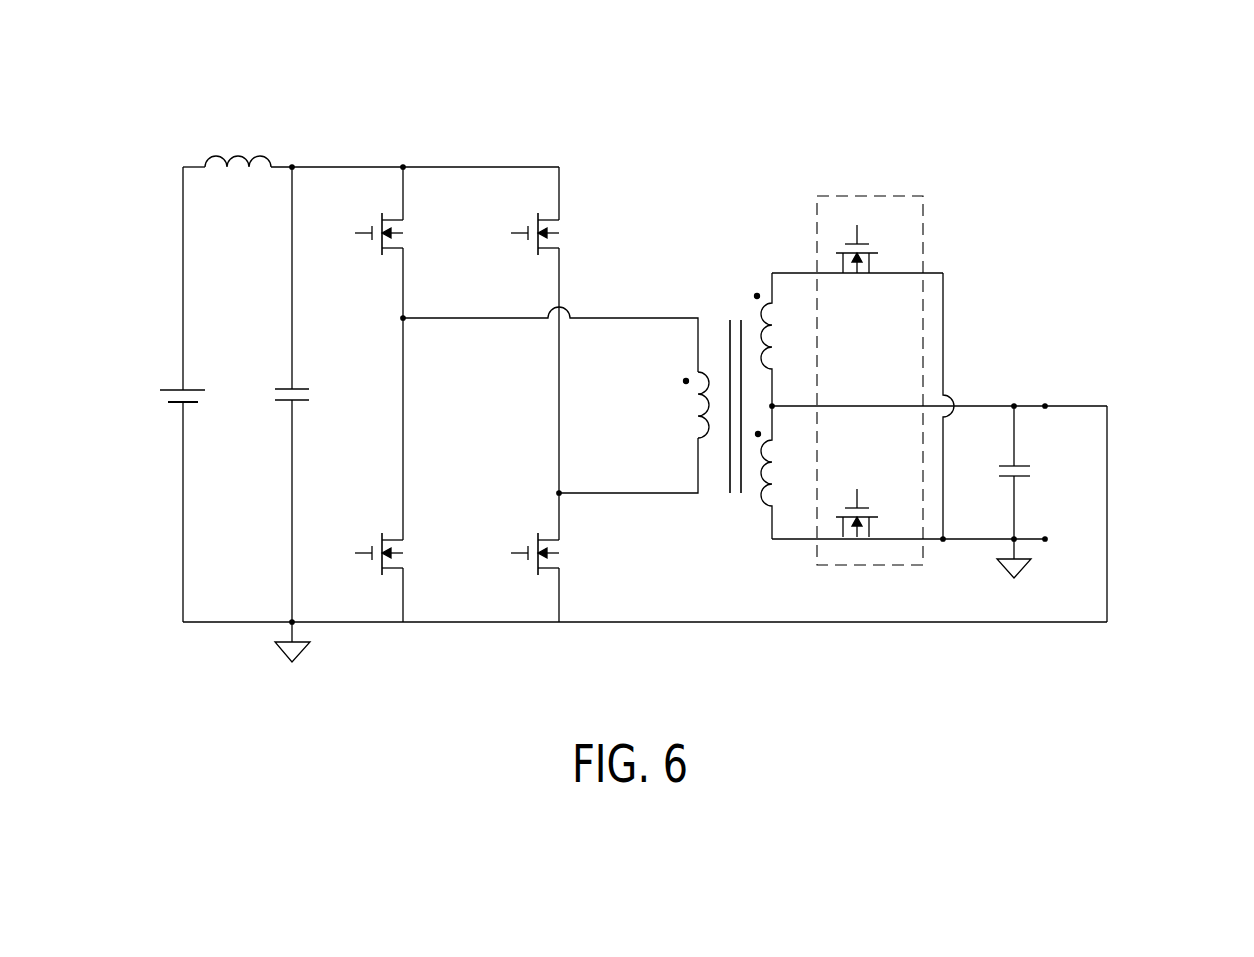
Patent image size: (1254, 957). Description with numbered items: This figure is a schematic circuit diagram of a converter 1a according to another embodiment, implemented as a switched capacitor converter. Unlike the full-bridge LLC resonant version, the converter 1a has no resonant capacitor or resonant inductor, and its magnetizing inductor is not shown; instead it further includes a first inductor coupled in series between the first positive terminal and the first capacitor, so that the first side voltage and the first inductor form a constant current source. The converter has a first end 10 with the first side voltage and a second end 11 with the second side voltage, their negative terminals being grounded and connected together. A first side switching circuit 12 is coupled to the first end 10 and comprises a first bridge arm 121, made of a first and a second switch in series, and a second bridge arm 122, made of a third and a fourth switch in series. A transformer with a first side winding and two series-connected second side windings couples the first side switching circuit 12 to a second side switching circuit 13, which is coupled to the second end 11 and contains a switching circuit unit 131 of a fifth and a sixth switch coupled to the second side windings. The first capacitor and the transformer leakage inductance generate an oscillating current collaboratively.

The converter 1a is at (1247, 99).
The first end 10 is at (162, 221).
The second end 11 is at (1056, 384).
The first side switching circuit 12 is at (450, 87).
The first bridge arm 121 is at (367, 157).
The second bridge arm 122 is at (470, 157).
The second side switching circuit 13 is at (886, 181).
The switching circuit unit 131 is at (838, 193).